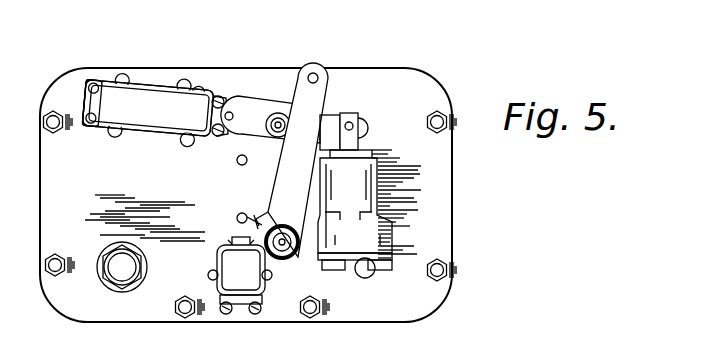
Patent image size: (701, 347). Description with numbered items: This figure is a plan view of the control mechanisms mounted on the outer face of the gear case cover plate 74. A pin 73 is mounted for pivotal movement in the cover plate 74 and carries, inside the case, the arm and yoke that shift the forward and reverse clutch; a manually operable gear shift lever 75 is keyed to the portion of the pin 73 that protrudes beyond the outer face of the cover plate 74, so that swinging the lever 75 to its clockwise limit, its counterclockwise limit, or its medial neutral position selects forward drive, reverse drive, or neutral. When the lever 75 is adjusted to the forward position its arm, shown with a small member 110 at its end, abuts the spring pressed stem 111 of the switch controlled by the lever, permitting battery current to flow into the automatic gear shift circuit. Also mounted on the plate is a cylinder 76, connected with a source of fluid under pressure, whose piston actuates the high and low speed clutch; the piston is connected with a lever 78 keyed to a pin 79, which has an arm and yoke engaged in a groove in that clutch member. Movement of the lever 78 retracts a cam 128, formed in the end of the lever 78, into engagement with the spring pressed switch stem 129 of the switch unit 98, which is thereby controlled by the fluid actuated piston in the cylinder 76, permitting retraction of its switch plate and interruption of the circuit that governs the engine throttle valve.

The gear case cover plate 74 is at (427, 88).
The second switch unit 98 is at (128, 118).
The spring pressed switch stem 129 is at (213, 139).
The cam 128 is at (231, 121).
The lever 78 is at (248, 102).
The pin 79 is at (282, 114).
The manually operable gear shift lever 75 is at (283, 168).
The pin 73 is at (288, 258).
The cylinder 76 is at (366, 180).
The roller 110 is at (258, 222).
The spring pressed stem 111 is at (236, 238).